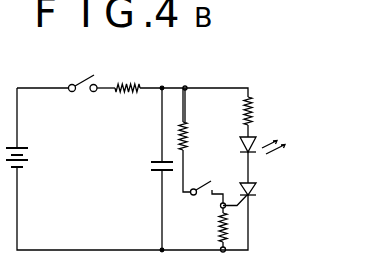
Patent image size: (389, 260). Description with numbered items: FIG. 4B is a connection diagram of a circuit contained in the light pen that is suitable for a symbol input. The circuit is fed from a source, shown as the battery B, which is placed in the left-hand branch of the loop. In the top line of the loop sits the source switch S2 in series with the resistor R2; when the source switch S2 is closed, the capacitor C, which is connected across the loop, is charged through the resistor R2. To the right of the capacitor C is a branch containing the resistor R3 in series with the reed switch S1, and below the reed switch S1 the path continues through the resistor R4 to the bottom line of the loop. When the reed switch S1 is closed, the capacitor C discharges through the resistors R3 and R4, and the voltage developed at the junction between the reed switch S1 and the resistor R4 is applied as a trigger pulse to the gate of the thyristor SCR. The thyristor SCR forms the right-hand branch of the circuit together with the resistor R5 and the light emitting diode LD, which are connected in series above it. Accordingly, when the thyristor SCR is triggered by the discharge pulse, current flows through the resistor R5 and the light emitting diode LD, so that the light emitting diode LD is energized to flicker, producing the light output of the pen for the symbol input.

The source switch S2 is at (83, 67).
The resistor R2 is at (127, 67).
The battery B is at (23, 161).
The capacitor C is at (156, 168).
The resistor R3 is at (196, 132).
The reed switch S1 is at (202, 177).
The resistor R5 is at (260, 114).
The light emitting diode LD is at (251, 147).
The thyristor SCR is at (265, 191).
The resistor R4 is at (212, 231).